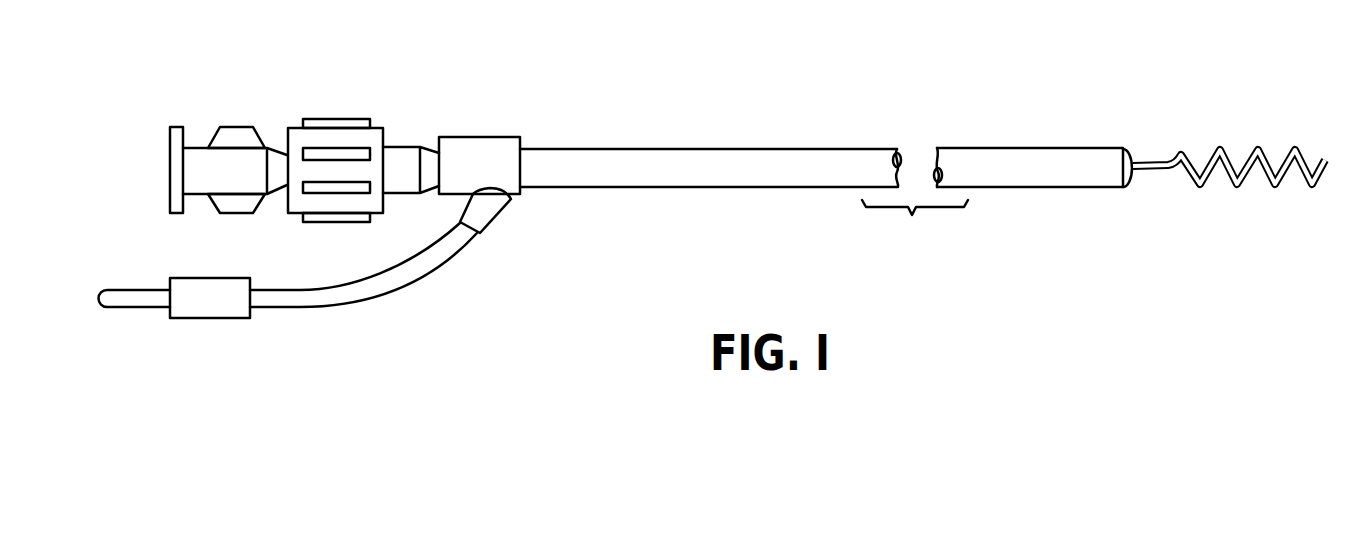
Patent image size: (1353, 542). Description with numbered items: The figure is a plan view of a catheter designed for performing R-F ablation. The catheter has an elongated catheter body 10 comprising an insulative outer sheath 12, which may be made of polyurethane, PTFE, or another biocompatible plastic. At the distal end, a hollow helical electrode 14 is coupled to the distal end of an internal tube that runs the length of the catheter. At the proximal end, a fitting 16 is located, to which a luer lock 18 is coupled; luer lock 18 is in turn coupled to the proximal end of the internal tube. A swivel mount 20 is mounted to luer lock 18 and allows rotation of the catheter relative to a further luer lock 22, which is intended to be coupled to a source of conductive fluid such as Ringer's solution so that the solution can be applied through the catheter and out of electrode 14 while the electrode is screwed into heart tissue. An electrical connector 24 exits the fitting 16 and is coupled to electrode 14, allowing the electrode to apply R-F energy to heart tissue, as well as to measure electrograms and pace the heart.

The catheter body 10 is at (720, 115).
The insulative outer sheath 12 is at (800, 148).
The helical electrode 14 is at (1152, 157).
The fitting 16 is at (493, 136).
The luer lock 18 is at (400, 146).
The swivel mount 20 is at (337, 120).
The luer lock 22 is at (233, 122).
The electrical connector 24 is at (205, 320).